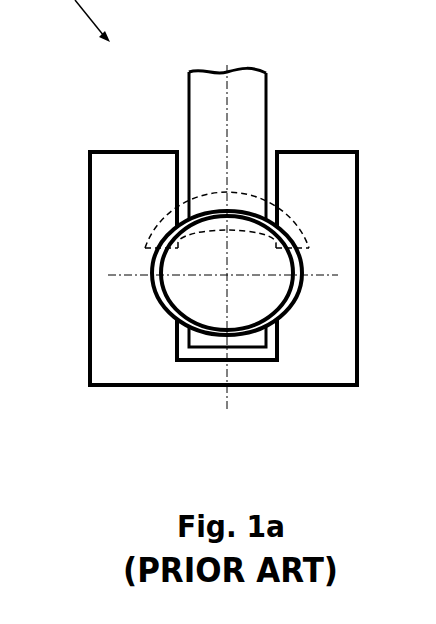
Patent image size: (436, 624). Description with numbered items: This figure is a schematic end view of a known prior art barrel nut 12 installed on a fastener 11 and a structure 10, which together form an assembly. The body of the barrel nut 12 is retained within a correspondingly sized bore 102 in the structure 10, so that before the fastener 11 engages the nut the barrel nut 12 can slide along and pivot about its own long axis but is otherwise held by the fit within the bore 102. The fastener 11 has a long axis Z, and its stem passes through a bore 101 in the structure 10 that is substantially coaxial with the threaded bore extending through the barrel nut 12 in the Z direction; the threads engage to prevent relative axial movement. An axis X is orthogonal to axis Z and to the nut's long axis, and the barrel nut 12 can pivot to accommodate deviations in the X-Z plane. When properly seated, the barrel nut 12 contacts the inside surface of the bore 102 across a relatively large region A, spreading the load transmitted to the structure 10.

The structure 10 is at (128, 182).
The fastener 11 is at (246, 137).
The barrel nut 12 is at (188, 298).
The bore 101 is at (177, 188).
The bore 102 is at (303, 263).
The region A is at (294, 223).
The axis X is at (138, 275).
The axis Z is at (227, 398).